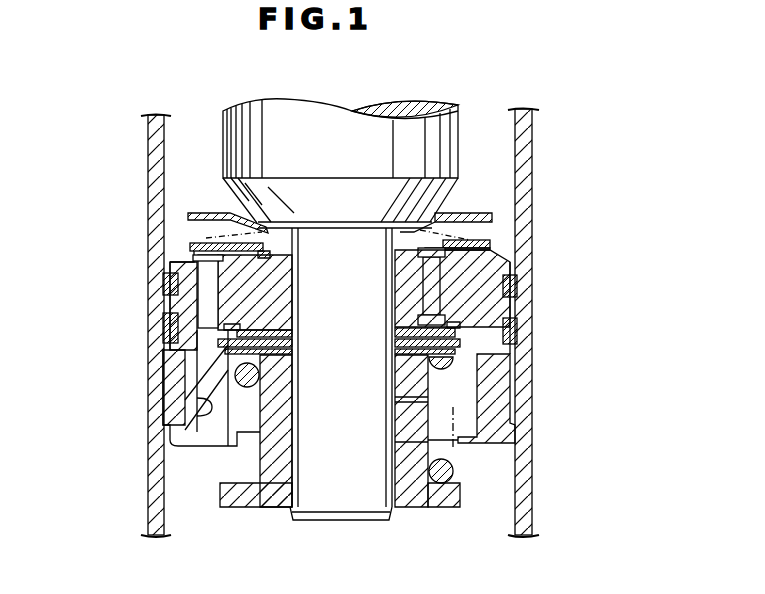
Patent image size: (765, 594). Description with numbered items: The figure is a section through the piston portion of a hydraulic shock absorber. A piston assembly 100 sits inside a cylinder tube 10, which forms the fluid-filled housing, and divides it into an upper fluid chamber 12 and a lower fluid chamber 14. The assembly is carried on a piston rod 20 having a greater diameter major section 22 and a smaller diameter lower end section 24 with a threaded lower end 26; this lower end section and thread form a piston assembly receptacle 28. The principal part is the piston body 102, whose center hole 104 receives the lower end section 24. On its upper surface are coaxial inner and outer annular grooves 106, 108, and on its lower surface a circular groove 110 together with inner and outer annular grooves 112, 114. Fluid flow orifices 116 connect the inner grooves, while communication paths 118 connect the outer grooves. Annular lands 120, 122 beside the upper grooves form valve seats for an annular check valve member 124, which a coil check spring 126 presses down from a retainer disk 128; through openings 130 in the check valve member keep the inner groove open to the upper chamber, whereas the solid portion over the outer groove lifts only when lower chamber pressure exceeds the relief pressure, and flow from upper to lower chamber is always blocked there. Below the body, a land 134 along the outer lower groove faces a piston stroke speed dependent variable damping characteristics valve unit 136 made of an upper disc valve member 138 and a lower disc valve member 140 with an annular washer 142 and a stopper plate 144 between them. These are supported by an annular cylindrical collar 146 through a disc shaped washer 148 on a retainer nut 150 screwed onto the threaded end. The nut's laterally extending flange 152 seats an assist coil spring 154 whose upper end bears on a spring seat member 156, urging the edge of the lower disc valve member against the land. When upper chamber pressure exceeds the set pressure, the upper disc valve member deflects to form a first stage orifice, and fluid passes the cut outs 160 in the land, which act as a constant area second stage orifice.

The cylinder tube 10 is at (552, 139).
The upper fluid chamber 12 is at (205, 152).
The lower fluid chamber 14 is at (202, 513).
The piston rod 20 is at (480, 128).
The greater diameter major section 22 is at (350, 126).
The smaller diameter lower end section 24 is at (312, 426).
The threaded lower end 26 is at (400, 505).
The piston assembly receptacle 28 is at (333, 524).
The piston assembly 100 is at (95, 459).
The piston body 102 is at (490, 272).
The center hole 104 is at (309, 221).
The inner annular groove 106 is at (248, 258).
The outer annular groove 108 is at (205, 243).
The circular groove 110 is at (205, 405).
The inner annular groove 112 is at (205, 325).
The outer annular groove 114 is at (225, 333).
The fluid flow orifices 116 is at (430, 285).
The communication paths 118 is at (205, 296).
The annular land 120 is at (236, 224).
The annular land 122 is at (200, 246).
The check valve member 124 is at (487, 246).
The check spring 126 is at (472, 237).
The retainer disk 128 is at (470, 215).
The through openings 130 is at (432, 247).
The land 134 is at (462, 345).
The variable damping characteristics valve unit 136 is at (472, 337).
The upper disc valve member 138 is at (472, 320).
The lower disc valve member 140 is at (212, 352).
The annular washer 142 is at (345, 321).
The stopper plate 144 is at (343, 345).
The annular cylindrical collar 146 is at (412, 412).
The disc shaped washer 148 is at (345, 376).
The retainer nut 150 is at (412, 508).
The laterally extending flange 152 is at (456, 509).
The assist coil spring 154 is at (452, 478).
The spring seat member 156 is at (462, 357).
The cut outs 160 is at (240, 346).